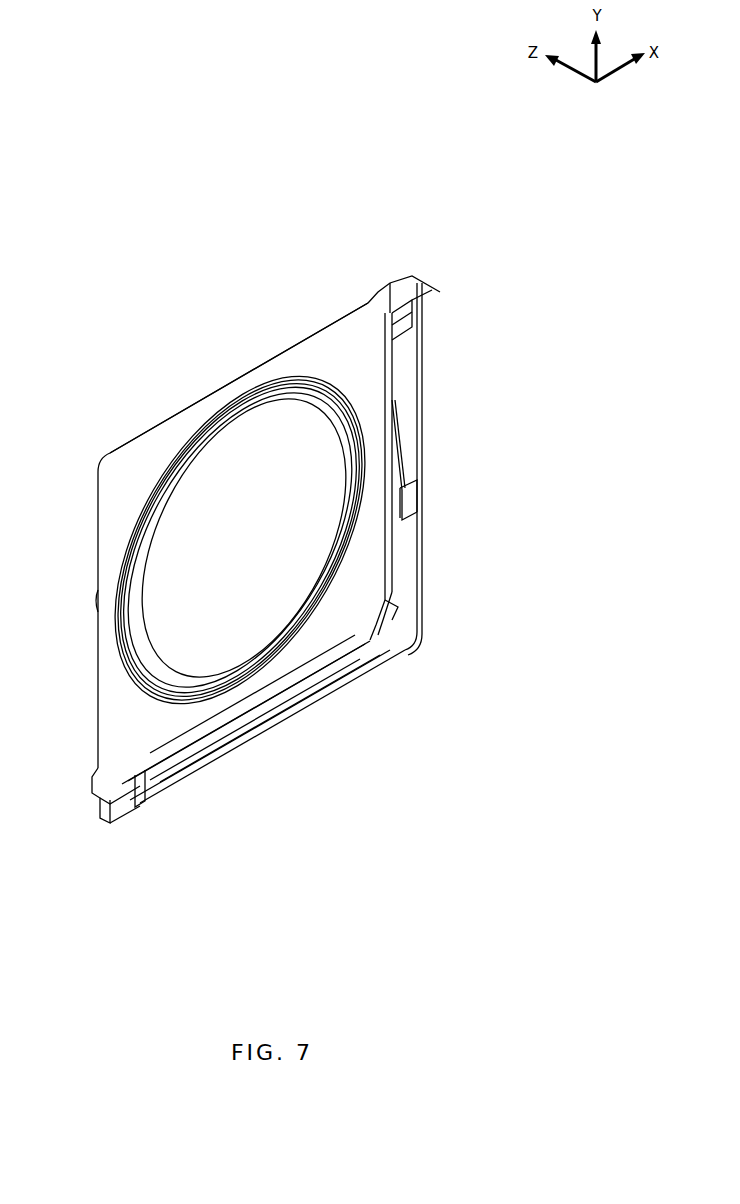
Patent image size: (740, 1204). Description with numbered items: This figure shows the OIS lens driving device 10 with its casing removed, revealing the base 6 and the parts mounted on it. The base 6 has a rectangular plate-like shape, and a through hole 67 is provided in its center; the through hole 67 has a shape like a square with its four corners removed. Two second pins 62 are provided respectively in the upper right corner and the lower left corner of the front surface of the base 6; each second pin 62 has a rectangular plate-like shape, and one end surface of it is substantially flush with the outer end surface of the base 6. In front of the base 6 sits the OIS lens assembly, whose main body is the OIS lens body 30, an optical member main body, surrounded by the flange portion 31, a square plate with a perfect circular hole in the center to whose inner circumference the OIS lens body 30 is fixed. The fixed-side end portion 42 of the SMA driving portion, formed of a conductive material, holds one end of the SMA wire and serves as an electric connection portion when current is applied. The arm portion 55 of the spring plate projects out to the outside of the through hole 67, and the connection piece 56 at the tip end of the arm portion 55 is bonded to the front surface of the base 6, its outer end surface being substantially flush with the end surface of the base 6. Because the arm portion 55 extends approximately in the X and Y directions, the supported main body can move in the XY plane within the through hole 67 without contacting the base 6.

The base 6 is at (415, 578).
The OIS lens driving device 10 is at (66, 334).
The OIS lens body 30 is at (235, 473).
The flange portion 31 is at (345, 357).
The fixed-side end portion 42 is at (417, 616).
The arm portion 55 is at (405, 452).
The connection piece 56 is at (412, 500).
The second pin 62 is at (108, 840).
The through hole 67 is at (220, 735).